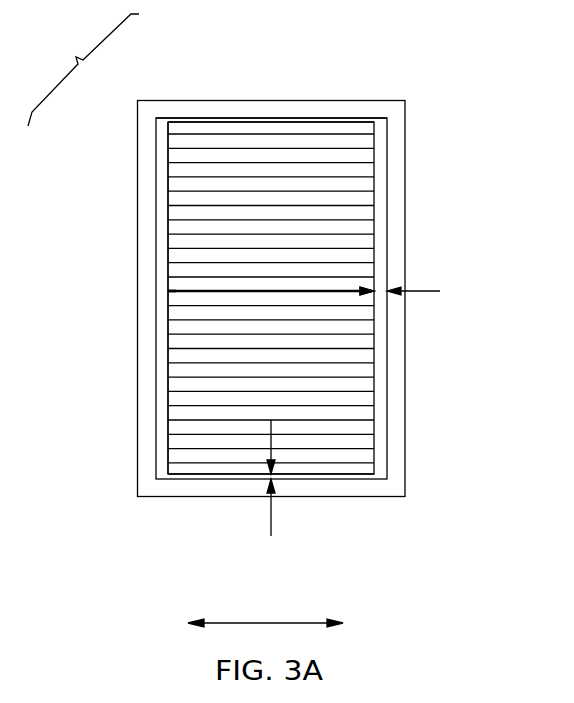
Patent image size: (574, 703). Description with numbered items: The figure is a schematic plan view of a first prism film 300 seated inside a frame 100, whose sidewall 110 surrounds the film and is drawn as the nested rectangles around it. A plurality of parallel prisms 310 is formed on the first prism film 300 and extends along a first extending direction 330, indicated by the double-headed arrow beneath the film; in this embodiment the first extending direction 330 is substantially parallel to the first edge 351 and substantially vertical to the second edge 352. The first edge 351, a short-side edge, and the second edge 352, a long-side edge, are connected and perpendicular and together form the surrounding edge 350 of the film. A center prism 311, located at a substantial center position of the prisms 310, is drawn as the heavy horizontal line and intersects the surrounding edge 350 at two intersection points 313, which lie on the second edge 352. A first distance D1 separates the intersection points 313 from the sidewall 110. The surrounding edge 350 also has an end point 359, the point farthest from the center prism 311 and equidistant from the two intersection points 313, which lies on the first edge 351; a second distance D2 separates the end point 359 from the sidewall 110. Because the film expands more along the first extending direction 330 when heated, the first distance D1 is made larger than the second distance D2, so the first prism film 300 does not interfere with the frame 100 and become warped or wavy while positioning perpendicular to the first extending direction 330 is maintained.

The frame 100 is at (395, 445).
The sidewall 110 is at (387, 399).
The first prism film 300 is at (175, 410).
The prisms 310 is at (343, 207).
The center prism 311 is at (199, 291).
The intersection points 313 is at (168, 291).
The first extending direction 330 is at (265, 613).
The surrounding edge 350 is at (83, 70).
The first edge 351 is at (227, 122).
The second edge 352 is at (168, 228).
The end point 359 is at (271, 122).
The first distance D1 is at (378, 291).
The second distance D2 is at (275, 484).